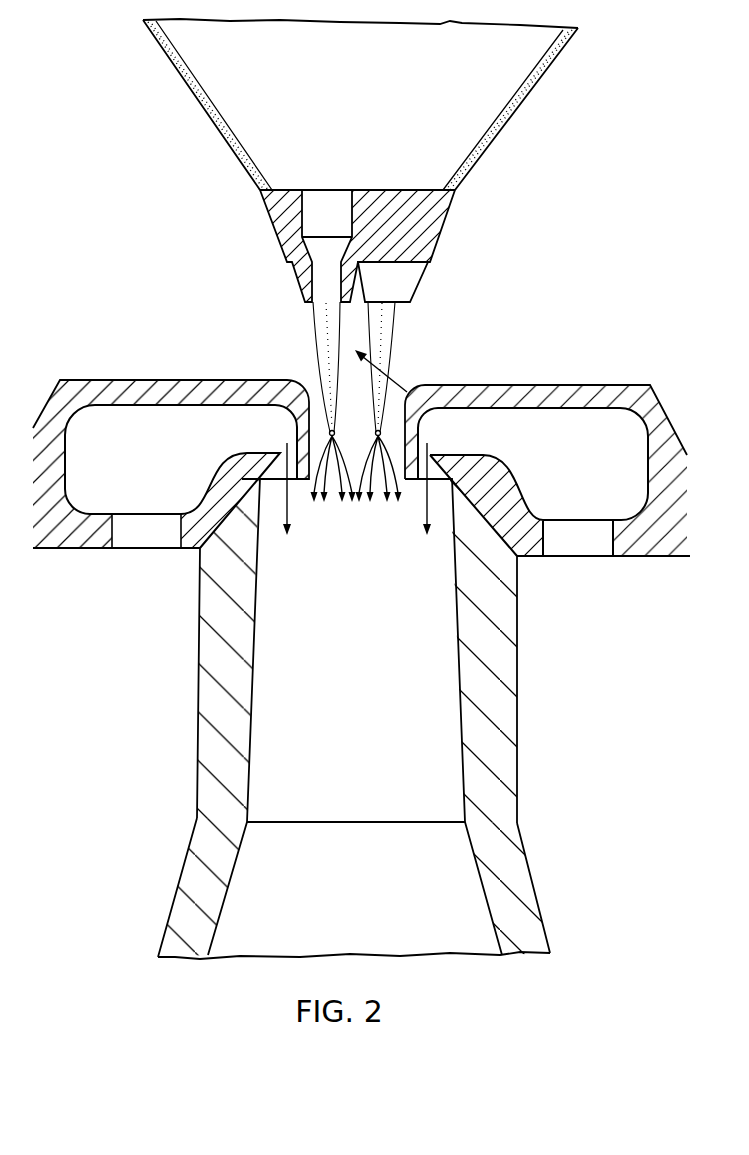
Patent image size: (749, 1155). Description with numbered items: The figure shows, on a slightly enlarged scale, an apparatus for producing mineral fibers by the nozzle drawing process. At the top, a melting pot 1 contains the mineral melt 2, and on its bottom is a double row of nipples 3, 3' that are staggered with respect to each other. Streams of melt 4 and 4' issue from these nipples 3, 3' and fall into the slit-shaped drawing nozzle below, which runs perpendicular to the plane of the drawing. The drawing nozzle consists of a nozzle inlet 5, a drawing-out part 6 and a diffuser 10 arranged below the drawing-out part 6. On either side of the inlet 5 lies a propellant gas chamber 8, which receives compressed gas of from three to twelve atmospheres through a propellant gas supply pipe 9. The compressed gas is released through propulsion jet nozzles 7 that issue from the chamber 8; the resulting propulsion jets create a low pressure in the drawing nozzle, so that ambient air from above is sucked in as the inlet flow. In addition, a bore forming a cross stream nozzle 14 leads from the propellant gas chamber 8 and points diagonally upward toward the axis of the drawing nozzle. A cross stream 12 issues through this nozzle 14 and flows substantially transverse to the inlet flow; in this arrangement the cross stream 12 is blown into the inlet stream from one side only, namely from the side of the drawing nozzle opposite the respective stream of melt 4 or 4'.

The melting pot 1 is at (505, 118).
The mineral melt 2 is at (498, 67).
The melt outflow opening (nipple) 3 is at (356, 246).
The melt outflow opening (nipple) of the second row 3' is at (412, 279).
The stream of melt 4 is at (306, 367).
The stream of melt from the second nipple row 4' is at (401, 367).
The inlet of the drawing nozzle 5 is at (353, 413).
The drawing-out part of the drawing nozzle 6 is at (281, 724).
The propulsion jet nozzle 7 is at (285, 455).
The propellant gas chamber 8 is at (98, 490).
The propellant gas supply pipe 9 is at (140, 540).
The diffuser 10 is at (257, 916).
The cross stream 12 is at (392, 381).
The cross stream nozzle (bore) 14 is at (418, 385).